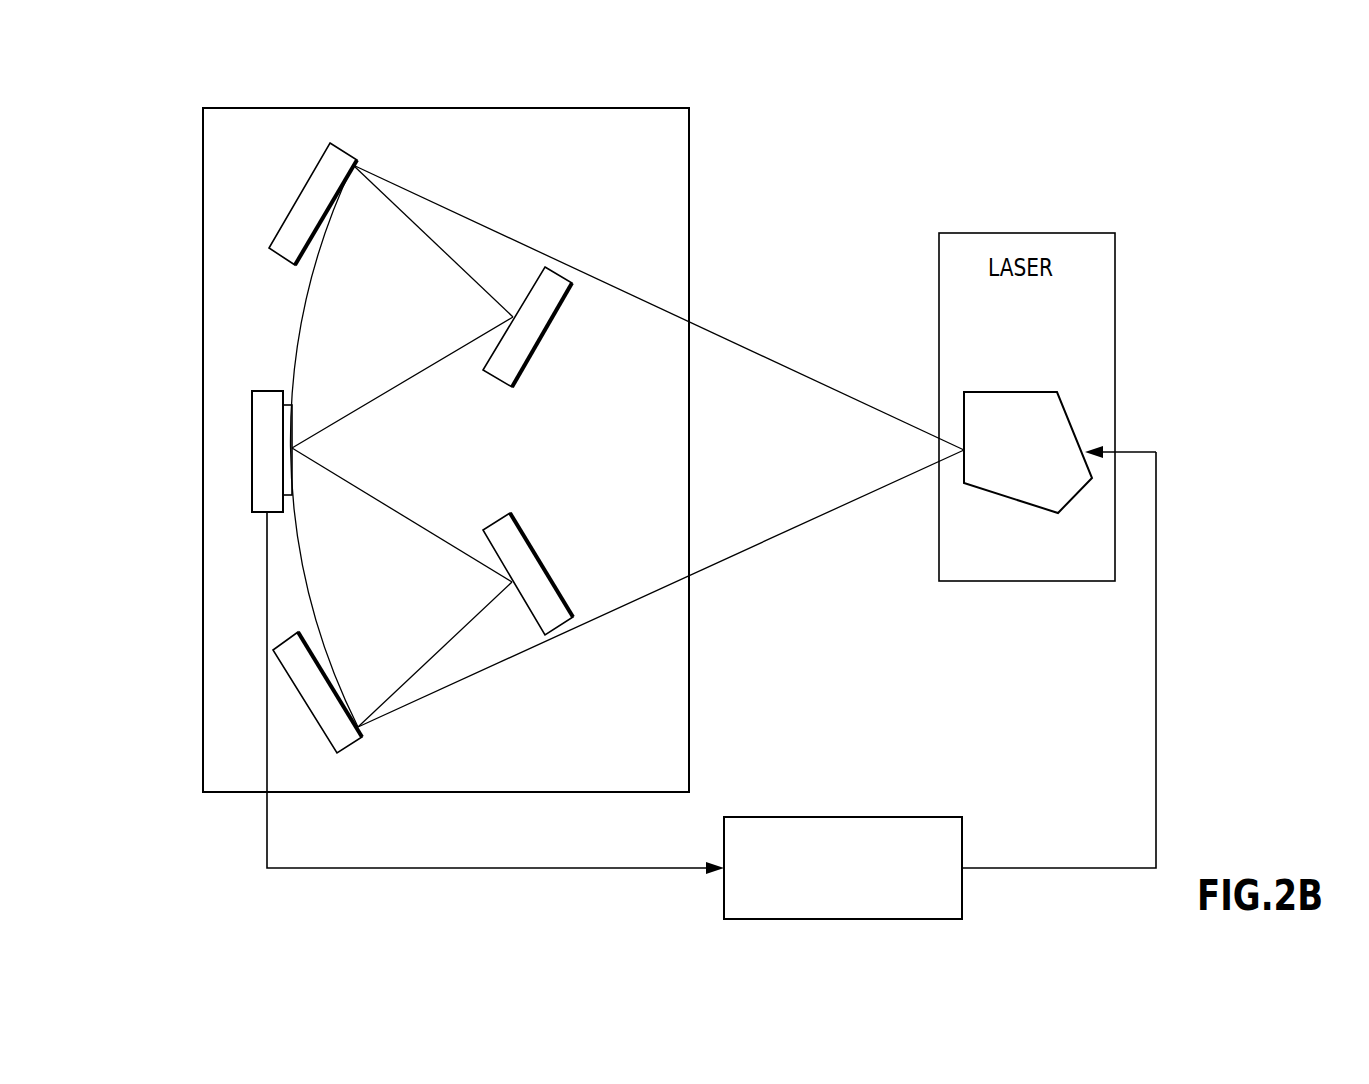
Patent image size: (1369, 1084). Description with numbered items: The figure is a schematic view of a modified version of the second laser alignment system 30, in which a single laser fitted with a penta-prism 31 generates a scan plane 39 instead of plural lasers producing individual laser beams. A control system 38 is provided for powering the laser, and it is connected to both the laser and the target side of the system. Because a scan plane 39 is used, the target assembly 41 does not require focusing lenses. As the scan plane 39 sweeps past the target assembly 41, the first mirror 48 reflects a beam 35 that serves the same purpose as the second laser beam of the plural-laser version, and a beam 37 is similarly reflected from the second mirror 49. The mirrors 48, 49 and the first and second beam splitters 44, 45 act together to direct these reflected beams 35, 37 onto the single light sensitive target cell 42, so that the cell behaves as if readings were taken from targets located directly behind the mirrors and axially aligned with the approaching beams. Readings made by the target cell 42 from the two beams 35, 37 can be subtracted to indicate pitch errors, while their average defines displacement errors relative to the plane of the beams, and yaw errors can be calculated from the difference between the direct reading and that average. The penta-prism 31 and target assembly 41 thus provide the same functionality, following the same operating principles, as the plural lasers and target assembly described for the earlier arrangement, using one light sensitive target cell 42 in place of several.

The laser alignment system 30 is at (831, 136).
The penta-prism 31 is at (997, 392).
The second laser beam 35 is at (402, 512).
The third laser beam 37 is at (403, 385).
The control system 38 is at (798, 817).
The scan plane 39 is at (755, 363).
The target assembly 41 is at (203, 248).
The light sensitive target cell 42 is at (267, 392).
The first beam splitter 44 is at (527, 547).
The second beam splitter 45 is at (538, 338).
The first mirror 48 is at (350, 742).
The second mirror 49 is at (338, 152).